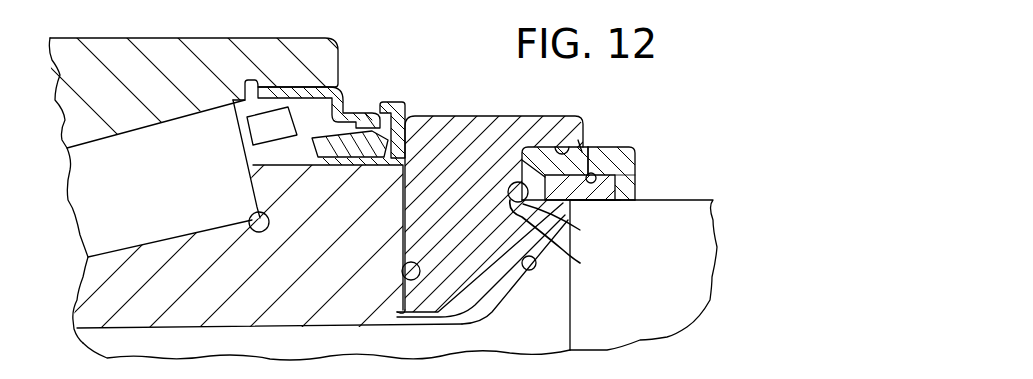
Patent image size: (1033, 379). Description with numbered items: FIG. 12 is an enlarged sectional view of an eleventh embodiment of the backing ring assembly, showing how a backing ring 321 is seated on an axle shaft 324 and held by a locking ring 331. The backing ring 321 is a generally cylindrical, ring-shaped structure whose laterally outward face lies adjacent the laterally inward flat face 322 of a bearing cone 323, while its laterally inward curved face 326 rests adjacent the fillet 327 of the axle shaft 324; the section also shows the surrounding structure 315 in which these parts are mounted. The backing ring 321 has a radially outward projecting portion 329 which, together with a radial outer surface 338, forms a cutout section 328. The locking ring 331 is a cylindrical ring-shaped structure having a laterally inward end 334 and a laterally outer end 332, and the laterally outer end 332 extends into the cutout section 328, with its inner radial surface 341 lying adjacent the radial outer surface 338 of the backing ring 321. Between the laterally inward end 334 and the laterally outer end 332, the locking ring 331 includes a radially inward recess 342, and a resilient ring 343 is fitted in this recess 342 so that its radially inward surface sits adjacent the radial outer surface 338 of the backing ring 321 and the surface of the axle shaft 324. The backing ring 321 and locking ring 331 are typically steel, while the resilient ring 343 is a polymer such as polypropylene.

The support block 315 is at (402, 222).
The backing ring 321 is at (446, 114).
The laterally inward flat face 322 is at (401, 266).
The bearing cone 323 is at (348, 327).
The axle shaft 324 is at (668, 200).
The laterally inward curved face 326 is at (522, 288).
The fillet 327 is at (529, 270).
The cutout section 328 is at (559, 146).
The radially outward projecting portion 329 is at (578, 140).
The locking ring 331 is at (628, 149).
The laterally outer end 332 is at (538, 164).
The laterally inward end 334 is at (638, 165).
The radial outer surface 338 is at (540, 238).
The inner radial surface 341 is at (552, 227).
The radially inward recess 342 is at (590, 147).
The resilient ring 343 is at (603, 202).